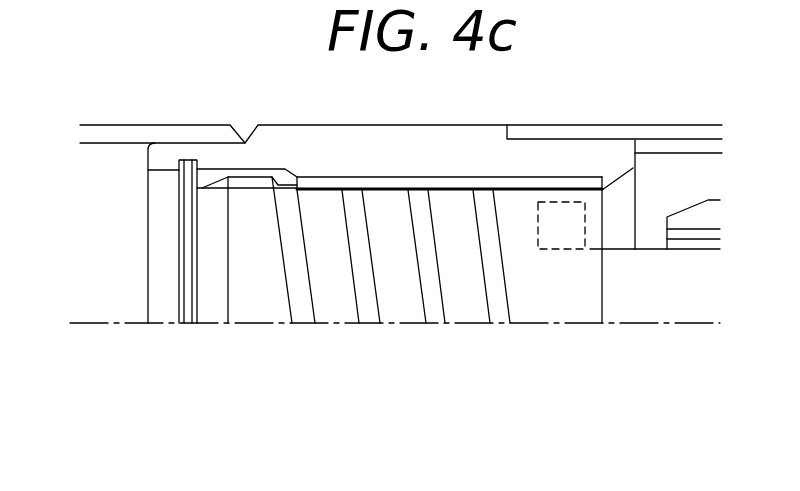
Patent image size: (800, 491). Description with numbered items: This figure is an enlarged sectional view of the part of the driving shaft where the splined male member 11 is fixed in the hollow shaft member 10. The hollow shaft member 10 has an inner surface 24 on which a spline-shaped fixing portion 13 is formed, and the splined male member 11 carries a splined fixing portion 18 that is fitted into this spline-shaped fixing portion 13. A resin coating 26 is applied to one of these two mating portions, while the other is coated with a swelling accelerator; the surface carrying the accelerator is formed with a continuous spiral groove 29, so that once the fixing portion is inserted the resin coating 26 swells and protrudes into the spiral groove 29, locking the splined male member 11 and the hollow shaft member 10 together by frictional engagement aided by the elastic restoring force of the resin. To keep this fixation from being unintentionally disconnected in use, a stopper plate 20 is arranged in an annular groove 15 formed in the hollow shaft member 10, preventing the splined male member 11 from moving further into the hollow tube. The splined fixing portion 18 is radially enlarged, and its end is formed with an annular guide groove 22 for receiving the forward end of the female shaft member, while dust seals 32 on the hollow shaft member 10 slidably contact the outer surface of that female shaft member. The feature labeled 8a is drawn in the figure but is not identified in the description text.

The hollow shaft member 10 is at (312, 147).
The spline-shaped fixing portion 13 is at (375, 182).
The resin coating 26 is at (453, 188).
The annular guide groove 22 is at (553, 223).
The housing flange 8a is at (652, 235).
The dust seal 32 is at (668, 134).
The inner surface of the hollow shaft member 24 is at (147, 172).
The annular groove 15 is at (184, 175).
The stopper plate 20 is at (190, 262).
The continuous spiral groove 29 is at (372, 282).
The splined fixing portion 18 is at (545, 280).
The splined male member 11 is at (643, 280).